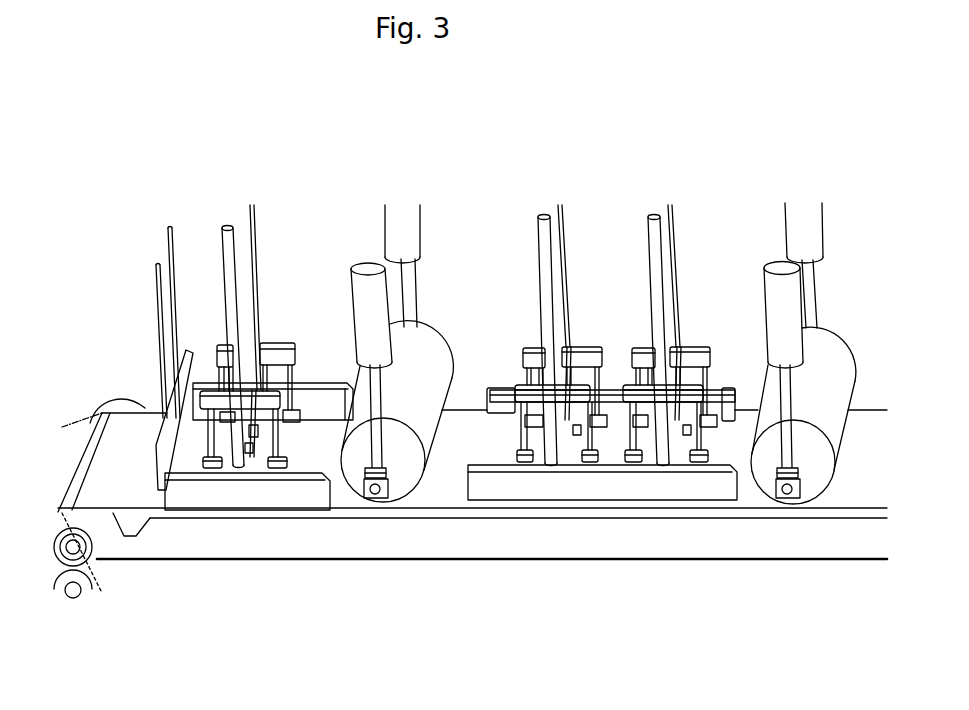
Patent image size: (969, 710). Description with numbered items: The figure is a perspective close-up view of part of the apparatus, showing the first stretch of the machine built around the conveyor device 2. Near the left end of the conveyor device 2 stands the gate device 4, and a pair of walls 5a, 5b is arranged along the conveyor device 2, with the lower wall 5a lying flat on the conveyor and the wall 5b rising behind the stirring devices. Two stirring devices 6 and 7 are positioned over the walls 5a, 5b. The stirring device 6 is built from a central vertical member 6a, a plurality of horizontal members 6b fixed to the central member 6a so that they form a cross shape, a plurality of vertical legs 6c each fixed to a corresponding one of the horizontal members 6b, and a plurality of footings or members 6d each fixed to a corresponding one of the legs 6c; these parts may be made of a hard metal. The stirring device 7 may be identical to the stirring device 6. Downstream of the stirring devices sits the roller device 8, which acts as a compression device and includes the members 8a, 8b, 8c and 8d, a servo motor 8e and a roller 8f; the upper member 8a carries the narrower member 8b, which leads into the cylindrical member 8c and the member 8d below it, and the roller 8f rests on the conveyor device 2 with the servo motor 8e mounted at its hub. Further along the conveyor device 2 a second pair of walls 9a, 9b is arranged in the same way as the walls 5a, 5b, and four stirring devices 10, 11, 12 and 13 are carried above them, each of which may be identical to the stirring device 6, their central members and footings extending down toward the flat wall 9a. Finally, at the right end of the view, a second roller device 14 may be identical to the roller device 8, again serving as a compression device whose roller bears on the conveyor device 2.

The conveyor device 2 is at (65, 448).
The gate device 4 is at (150, 317).
The wall 5a is at (258, 490).
The wall 5b is at (320, 397).
The stirring device 6 is at (252, 355).
The central vertical member 6a is at (235, 343).
The horizontal members 6b is at (220, 390).
The vertical legs 6c is at (280, 445).
The footings 6d is at (212, 467).
The stirring device 7 is at (255, 282).
The roller device 8 is at (385, 367).
The member 8a is at (402, 237).
The member 8b is at (414, 283).
The member 8c is at (362, 341).
The member 8d is at (381, 418).
The servo motor 8e is at (378, 492).
The roller 8f is at (417, 403).
The wall 9a is at (593, 482).
The wall 9b is at (610, 393).
The stirring device 10 is at (535, 307).
The stirring device 11 is at (560, 242).
The stirring device 12 is at (648, 295).
The stirring device 13 is at (670, 243).
The roller device 14 is at (765, 307).